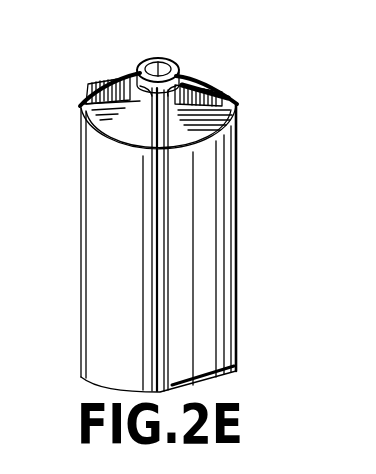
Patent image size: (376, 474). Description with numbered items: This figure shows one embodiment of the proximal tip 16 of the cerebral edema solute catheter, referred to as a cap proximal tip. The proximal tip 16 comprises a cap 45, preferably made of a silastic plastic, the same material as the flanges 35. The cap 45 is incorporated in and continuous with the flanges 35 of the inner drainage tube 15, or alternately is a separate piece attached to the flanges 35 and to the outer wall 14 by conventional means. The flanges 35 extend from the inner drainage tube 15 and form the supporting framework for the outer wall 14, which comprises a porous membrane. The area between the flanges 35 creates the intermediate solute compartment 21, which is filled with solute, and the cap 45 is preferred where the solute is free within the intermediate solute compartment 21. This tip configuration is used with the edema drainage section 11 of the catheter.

The edema drainage section 11 is at (250, 288).
The outer wall 14 is at (238, 230).
The inner drainage tube 15 is at (153, 60).
The proximal tip 16 is at (184, 69).
The intermediate solute compartment 21 is at (80, 105).
The flanges 35 is at (112, 80).
The cap 45 is at (224, 97).